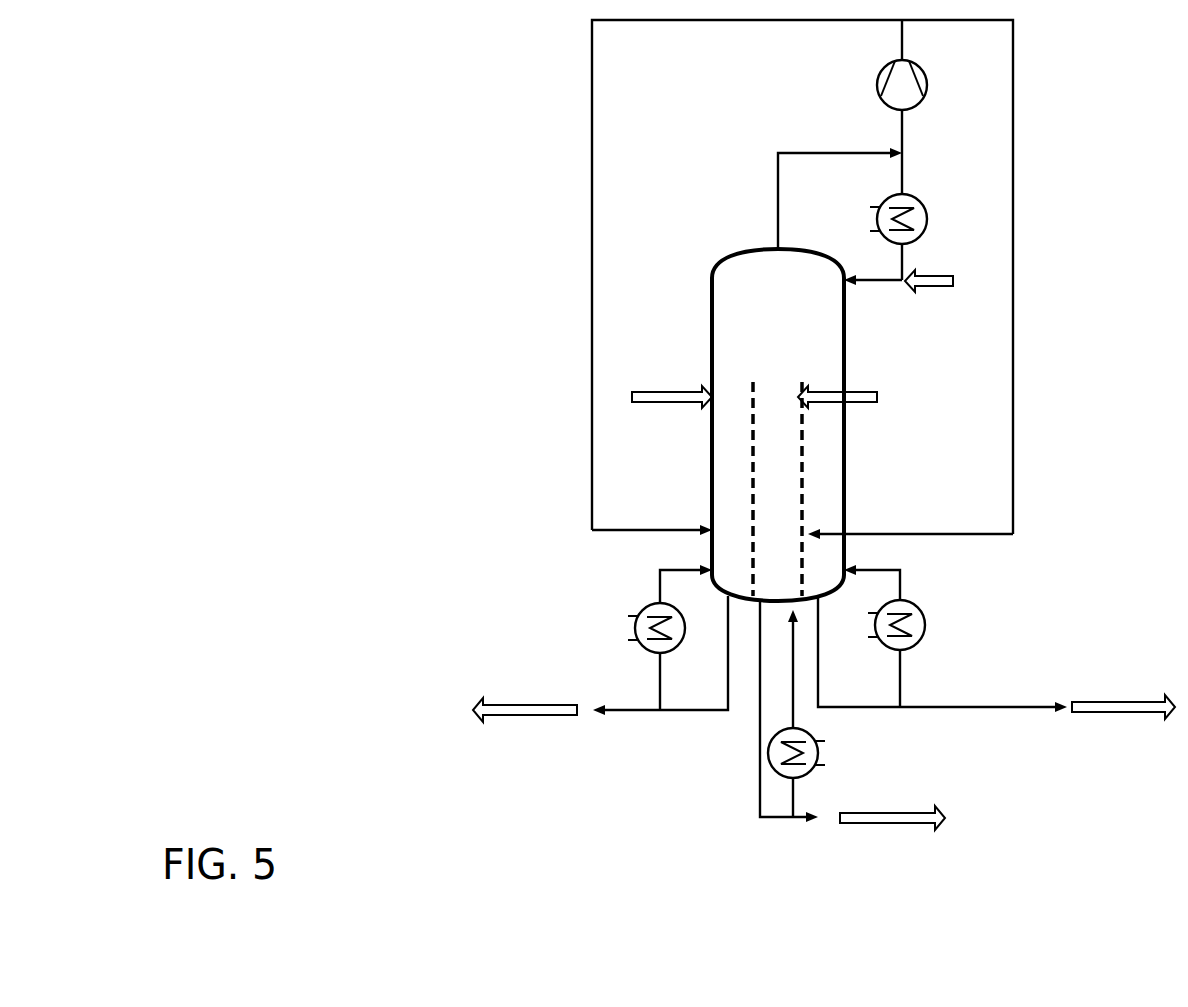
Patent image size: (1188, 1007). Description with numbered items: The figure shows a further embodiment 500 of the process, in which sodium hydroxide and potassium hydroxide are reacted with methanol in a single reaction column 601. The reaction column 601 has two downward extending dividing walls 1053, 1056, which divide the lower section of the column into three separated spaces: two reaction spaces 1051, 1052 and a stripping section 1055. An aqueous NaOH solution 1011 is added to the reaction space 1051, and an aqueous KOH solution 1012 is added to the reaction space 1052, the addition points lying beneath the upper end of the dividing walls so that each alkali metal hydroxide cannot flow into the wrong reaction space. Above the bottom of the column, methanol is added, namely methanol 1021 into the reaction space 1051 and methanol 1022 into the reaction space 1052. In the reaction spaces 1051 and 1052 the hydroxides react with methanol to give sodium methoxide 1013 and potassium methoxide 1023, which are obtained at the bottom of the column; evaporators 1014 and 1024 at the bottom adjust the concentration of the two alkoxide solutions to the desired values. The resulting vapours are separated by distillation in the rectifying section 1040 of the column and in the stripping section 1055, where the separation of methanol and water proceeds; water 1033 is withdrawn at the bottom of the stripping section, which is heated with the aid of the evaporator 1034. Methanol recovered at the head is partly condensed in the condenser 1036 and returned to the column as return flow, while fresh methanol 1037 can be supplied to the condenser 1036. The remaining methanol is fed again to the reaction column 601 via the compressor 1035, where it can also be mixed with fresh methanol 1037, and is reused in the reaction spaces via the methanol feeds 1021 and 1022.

The embodiment 500 is at (537, 372).
The reaction column 601 is at (860, 352).
The aqueous NaOH solution 1011 is at (670, 385).
The aqueous KOH solution 1012 is at (888, 396).
The sodium methoxide 1013 is at (525, 725).
The evaporator 1014 is at (607, 628).
The methanol 1021 is at (652, 518).
The methanol 1022 is at (910, 521).
The potassium methoxide 1023 is at (892, 831).
The evaporator 1024 is at (848, 759).
The water 1033 is at (1123, 723).
The evaporator 1034 is at (945, 625).
The compressor 1035 is at (943, 86).
The condenser 1036 is at (952, 220).
The fresh methanol 1037 is at (970, 281).
The rectifying section 1040 is at (778, 316).
The reaction space 1051 is at (725, 426).
The reaction space 1052 is at (777, 466).
The dividing wall 1053 is at (753, 492).
The stripping section 1055 is at (818, 442).
The dividing wall 1056 is at (804, 483).